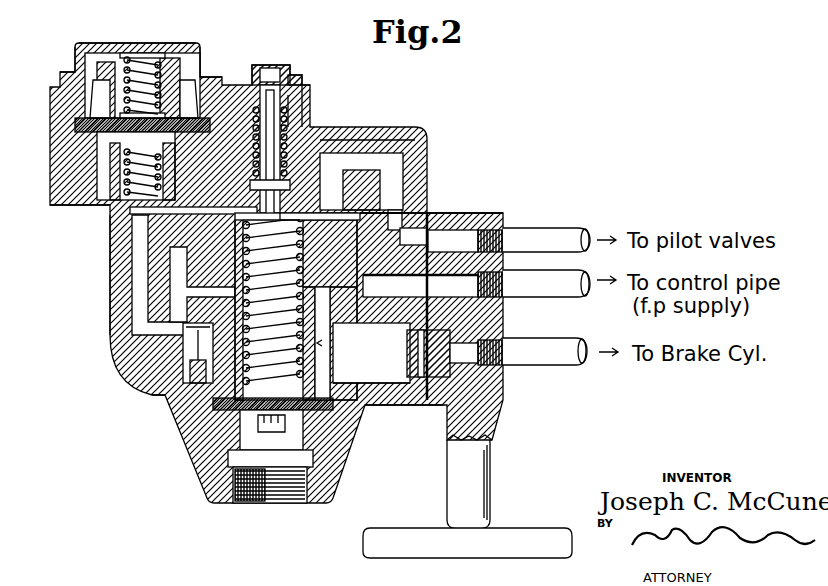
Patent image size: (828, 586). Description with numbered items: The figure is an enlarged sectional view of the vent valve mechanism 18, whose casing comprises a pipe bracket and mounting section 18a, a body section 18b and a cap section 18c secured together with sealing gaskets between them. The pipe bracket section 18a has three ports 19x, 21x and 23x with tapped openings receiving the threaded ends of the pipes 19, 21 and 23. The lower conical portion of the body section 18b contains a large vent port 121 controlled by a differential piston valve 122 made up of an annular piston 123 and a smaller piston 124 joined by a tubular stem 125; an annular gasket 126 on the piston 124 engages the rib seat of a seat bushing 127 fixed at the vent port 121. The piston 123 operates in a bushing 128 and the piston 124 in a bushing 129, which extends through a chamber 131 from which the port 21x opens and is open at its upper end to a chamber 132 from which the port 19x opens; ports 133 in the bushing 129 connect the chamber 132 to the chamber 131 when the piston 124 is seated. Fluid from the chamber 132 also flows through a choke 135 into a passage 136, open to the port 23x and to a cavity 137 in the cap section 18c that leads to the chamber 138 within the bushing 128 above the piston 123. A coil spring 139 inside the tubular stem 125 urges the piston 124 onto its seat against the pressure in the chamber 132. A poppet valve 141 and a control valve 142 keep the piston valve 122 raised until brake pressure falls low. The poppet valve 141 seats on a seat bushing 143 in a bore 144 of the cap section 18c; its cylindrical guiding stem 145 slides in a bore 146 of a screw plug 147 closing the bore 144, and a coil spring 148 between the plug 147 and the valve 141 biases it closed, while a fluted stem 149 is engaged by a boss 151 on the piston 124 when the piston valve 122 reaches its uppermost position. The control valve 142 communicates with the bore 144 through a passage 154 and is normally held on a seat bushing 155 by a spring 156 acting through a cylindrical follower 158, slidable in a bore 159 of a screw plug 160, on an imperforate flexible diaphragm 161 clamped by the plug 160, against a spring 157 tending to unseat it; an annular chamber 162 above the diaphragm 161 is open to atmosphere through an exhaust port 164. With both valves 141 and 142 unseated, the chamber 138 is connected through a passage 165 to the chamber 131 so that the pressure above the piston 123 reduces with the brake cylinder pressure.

The vent valve mechanism 18 is at (420, 131).
The pipe bracket and mounting section 18a is at (495, 406).
The body section 18b is at (117, 302).
The cap section 18c is at (372, 134).
The pipe 19 is at (573, 278).
The port 19x is at (492, 260).
The pipe 21 is at (557, 348).
The port 21x is at (503, 332).
The pipe 23 is at (525, 242).
The port 23x is at (483, 212).
The vent port 121 is at (303, 490).
The differential piston valve 122 is at (416, 353).
The annular piston 123 is at (230, 252).
The piston 124 is at (217, 403).
The tubular stem 125 is at (324, 352).
The annular gasket 126 is at (297, 414).
The seat bushing 127 is at (303, 449).
The bushing 128 is at (358, 240).
The bushing 129 is at (324, 333).
The chamber 131 is at (175, 375).
The chamber 132 is at (432, 299).
The ports 133 is at (190, 340).
The choke 135 is at (413, 237).
The passage 136 is at (403, 208).
The cavity or passage 137 is at (387, 163).
The chamber 138 is at (178, 242).
The coil spring 139 is at (298, 230).
The poppet valve 141 is at (259, 180).
The control valve 142 is at (107, 207).
The seat bushing 143 is at (361, 181).
The bore 144 is at (299, 98).
The cylindrical guiding stem 145 is at (298, 80).
The bore 146 is at (292, 72).
The screw plug 147 is at (256, 66).
The coil spring 148 is at (288, 128).
The fluted stem 149 is at (244, 221).
The boss 151 is at (324, 376).
The passage 154 is at (232, 150).
The seat bushing 155 is at (112, 212).
The spring 156 is at (142, 57).
The spring 157 is at (130, 217).
The cylindrical follower 158 is at (104, 55).
The bore 159 is at (160, 55).
The screw plug 160 is at (196, 46).
The imperforate flexible diaphragm 161 is at (142, 99).
The annular cavity or chamber 162 is at (78, 74).
The exhaust port 164 is at (80, 47).
The passage 165 is at (133, 323).